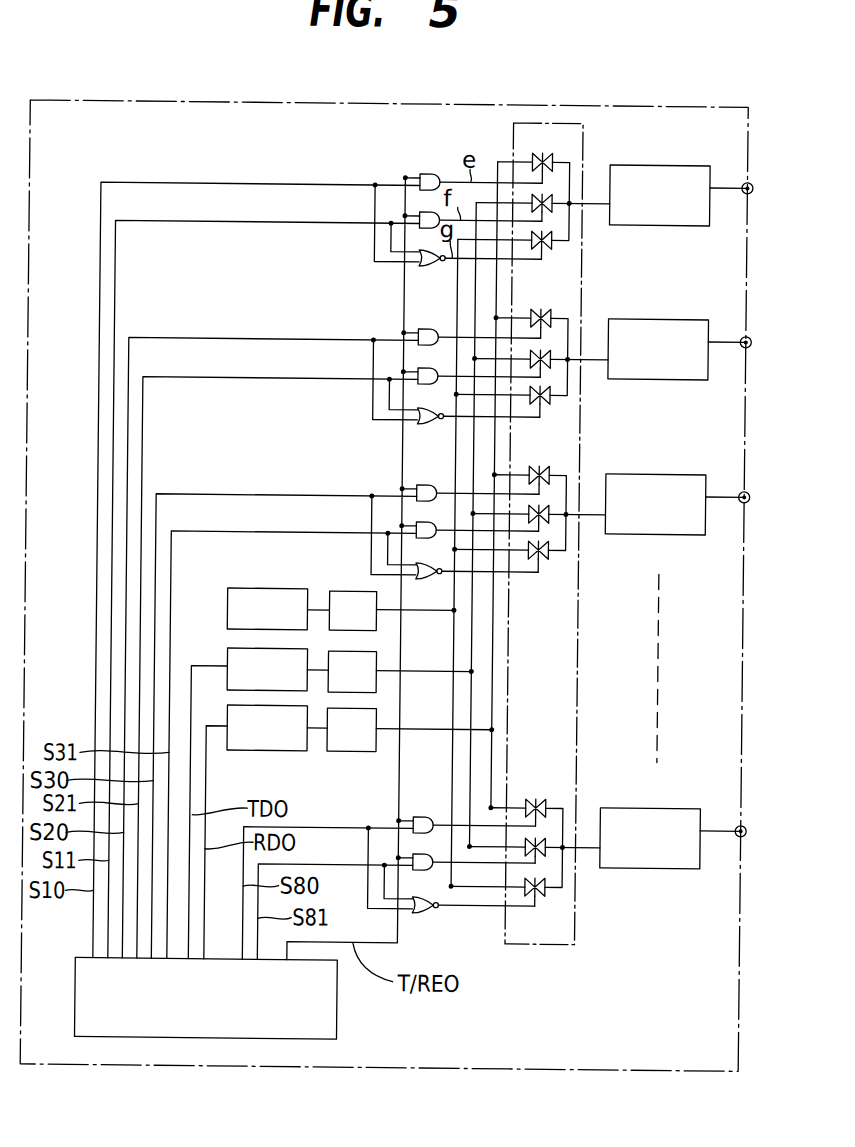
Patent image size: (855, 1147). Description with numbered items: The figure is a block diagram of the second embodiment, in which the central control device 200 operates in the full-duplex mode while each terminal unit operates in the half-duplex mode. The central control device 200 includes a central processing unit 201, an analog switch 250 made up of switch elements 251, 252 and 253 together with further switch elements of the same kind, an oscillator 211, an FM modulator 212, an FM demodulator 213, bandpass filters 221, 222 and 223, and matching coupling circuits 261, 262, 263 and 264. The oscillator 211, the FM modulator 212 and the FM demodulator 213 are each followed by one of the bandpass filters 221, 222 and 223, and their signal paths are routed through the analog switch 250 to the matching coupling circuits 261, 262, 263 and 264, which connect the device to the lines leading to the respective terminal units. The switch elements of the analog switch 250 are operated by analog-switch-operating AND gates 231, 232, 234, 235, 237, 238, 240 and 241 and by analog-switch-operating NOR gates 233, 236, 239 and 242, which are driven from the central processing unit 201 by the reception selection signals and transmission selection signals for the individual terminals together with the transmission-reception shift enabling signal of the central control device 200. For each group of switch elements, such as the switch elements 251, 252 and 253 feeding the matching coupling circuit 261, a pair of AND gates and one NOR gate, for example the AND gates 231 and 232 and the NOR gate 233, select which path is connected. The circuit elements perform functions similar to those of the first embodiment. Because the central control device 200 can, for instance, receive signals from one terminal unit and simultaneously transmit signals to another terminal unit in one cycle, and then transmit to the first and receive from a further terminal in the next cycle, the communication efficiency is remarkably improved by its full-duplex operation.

The central control device 200 is at (576, 1068).
The central processing unit 201 is at (342, 1016).
The oscillator 211 is at (238, 590).
The FM modulator 212 is at (238, 650).
The FM demodulator 213 is at (240, 752).
The bandpass filter 221 is at (333, 592).
The bandpass filter 222 is at (378, 682).
The band-pass filter 223 is at (351, 752).
The analog-switch-operating AND gate 231 is at (418, 174).
The AND gate 232 is at (416, 213).
The analog-switch-operating NOR gate 233 is at (422, 266).
The analog-switch-operating AND gate 234 is at (414, 330).
The analog-switch-operating AND gate 235 is at (414, 372).
The analog-switch-operating NOR gate 236 is at (414, 426).
The analog-switch-operating AND gate 237 is at (422, 485).
The analog-switch-operating AND gate 238 is at (414, 525).
The analog-switch-operating NOR gate 239 is at (422, 583).
The analog-switch-operating AND gate 240 is at (420, 817).
The analog-switch-operating AND gate 241 is at (413, 855).
The analog-switch-operating NOR gate 242 is at (432, 915).
The analog switch 250 is at (526, 122).
The switch element 251 is at (532, 154).
The switch element 252 is at (546, 197).
The switch element 253 is at (544, 246).
The matching coupling circuit 261 is at (687, 163).
The matching coupling circuit 262 is at (700, 317).
The coupling circuit 263 is at (673, 472).
The matching coupling circuit 264 is at (688, 806).